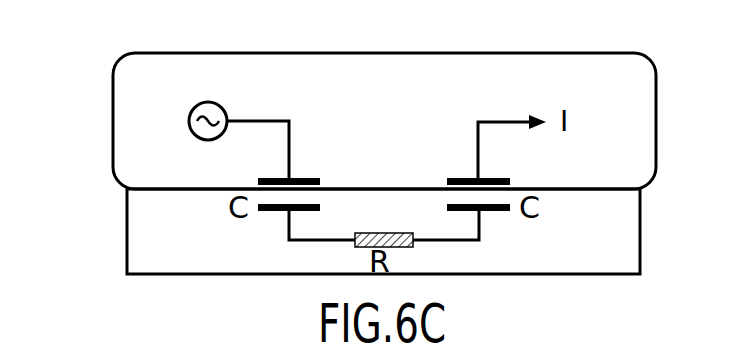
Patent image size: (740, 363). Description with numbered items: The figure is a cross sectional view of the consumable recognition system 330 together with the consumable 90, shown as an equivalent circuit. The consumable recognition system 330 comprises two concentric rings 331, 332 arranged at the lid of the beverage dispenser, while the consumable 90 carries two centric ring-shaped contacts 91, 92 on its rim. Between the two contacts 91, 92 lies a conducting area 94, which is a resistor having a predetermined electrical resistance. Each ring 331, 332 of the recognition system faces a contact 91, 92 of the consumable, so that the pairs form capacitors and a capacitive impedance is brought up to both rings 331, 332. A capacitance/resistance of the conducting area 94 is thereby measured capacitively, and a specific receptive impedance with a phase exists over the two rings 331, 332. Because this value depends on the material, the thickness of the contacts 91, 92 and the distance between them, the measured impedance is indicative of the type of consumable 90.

The consumable recognition system 330 is at (100, 127).
The consumable 90 is at (102, 230).
The concentric ring 332 is at (302, 177).
The concentric ring 331 is at (496, 177).
The ring-shaped contact 92 is at (276, 212).
The ring-shaped contact 91 is at (490, 212).
The conducting area 94 is at (410, 246).